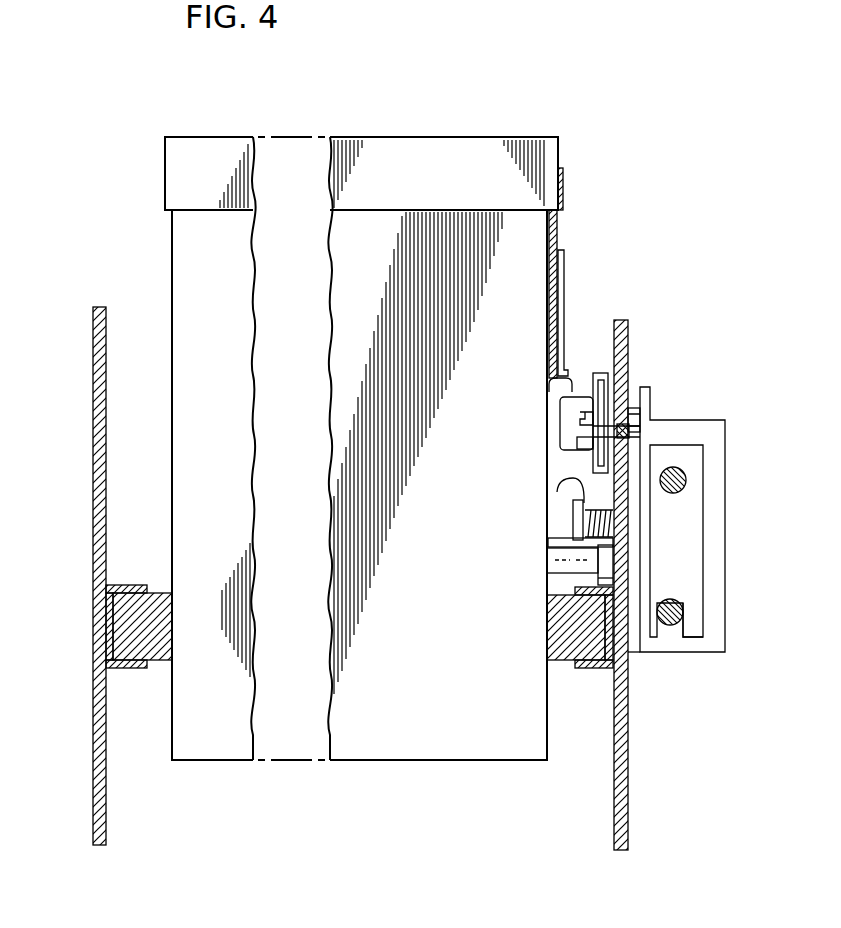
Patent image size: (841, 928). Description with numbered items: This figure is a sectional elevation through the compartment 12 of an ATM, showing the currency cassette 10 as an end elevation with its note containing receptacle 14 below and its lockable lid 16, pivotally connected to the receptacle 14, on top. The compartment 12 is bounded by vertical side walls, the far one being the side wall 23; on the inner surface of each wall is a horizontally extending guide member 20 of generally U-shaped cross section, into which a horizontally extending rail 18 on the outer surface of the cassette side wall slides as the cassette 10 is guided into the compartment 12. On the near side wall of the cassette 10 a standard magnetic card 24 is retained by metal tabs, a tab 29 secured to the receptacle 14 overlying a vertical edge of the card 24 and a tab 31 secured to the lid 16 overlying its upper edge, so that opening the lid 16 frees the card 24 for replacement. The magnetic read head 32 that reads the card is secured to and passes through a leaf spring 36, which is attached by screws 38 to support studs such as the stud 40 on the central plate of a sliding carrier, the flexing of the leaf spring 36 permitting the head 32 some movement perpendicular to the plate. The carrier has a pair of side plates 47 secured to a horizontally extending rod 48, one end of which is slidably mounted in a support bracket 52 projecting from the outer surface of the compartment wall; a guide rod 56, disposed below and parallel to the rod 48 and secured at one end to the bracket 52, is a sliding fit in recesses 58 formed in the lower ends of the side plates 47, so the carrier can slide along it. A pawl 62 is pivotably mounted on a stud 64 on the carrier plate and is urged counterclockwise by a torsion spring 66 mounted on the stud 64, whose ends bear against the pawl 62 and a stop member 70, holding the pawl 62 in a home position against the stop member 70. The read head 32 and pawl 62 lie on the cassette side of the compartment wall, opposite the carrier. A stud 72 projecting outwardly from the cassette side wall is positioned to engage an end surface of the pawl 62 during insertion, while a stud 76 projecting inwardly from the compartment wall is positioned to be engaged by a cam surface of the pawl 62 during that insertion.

The cassette 10 is at (438, 128).
The compartment 12 is at (80, 833).
The note containing receptacle 14 is at (410, 762).
The lockable lid 16 is at (222, 137).
The rail 18 is at (146, 592).
The guide member 20 is at (127, 668).
The side wall 23 is at (108, 428).
The magnetic card 24 is at (565, 382).
The metal tab 29 is at (567, 281).
The metal tab 31 is at (565, 196).
The magnetic read head 32 is at (567, 410).
The leaf spring 36 is at (612, 378).
The screw 38 is at (585, 441).
The support stud 40 is at (635, 418).
The side plate 47 is at (690, 518).
The rod 48 is at (685, 481).
The support bracket 52 is at (723, 432).
The guide rod 56 is at (680, 613).
The recess 58 is at (682, 636).
The pawl 62 is at (573, 541).
The stud 64 is at (572, 516).
The torsion spring 66 is at (566, 486).
The stop member 70 is at (630, 550).
The stud 72 is at (560, 568).
The stud 76 is at (608, 578).